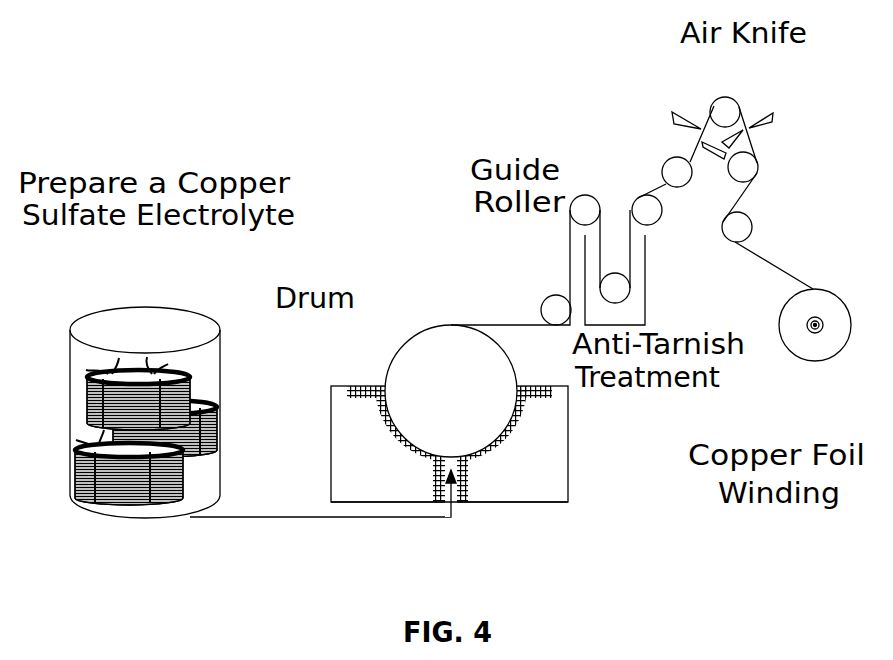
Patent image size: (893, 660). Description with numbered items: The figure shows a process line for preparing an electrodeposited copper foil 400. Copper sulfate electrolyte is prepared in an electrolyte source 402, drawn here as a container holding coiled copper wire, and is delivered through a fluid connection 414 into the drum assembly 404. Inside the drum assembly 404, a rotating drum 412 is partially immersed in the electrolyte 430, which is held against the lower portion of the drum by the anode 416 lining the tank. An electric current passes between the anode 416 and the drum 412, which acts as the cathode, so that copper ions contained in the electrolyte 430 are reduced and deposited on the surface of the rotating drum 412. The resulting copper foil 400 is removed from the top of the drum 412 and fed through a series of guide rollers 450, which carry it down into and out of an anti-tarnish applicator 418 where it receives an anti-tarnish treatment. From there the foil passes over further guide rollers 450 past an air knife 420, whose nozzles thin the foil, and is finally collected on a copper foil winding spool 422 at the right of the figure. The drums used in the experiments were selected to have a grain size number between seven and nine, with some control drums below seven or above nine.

The copper foil 400 is at (488, 325).
The electrolyte source 402 is at (136, 306).
The drum assembly 404 is at (331, 423).
The rotating drum 412 is at (402, 347).
The fluid connection 414 is at (427, 517).
The anode 416 is at (513, 450).
The anti-tarnish applicator 418 is at (645, 312).
The air knife 420 is at (770, 113).
The copper foil winding spool 422 is at (813, 332).
The electrolyte 430 is at (528, 416).
The guide rollers 450 is at (585, 196).